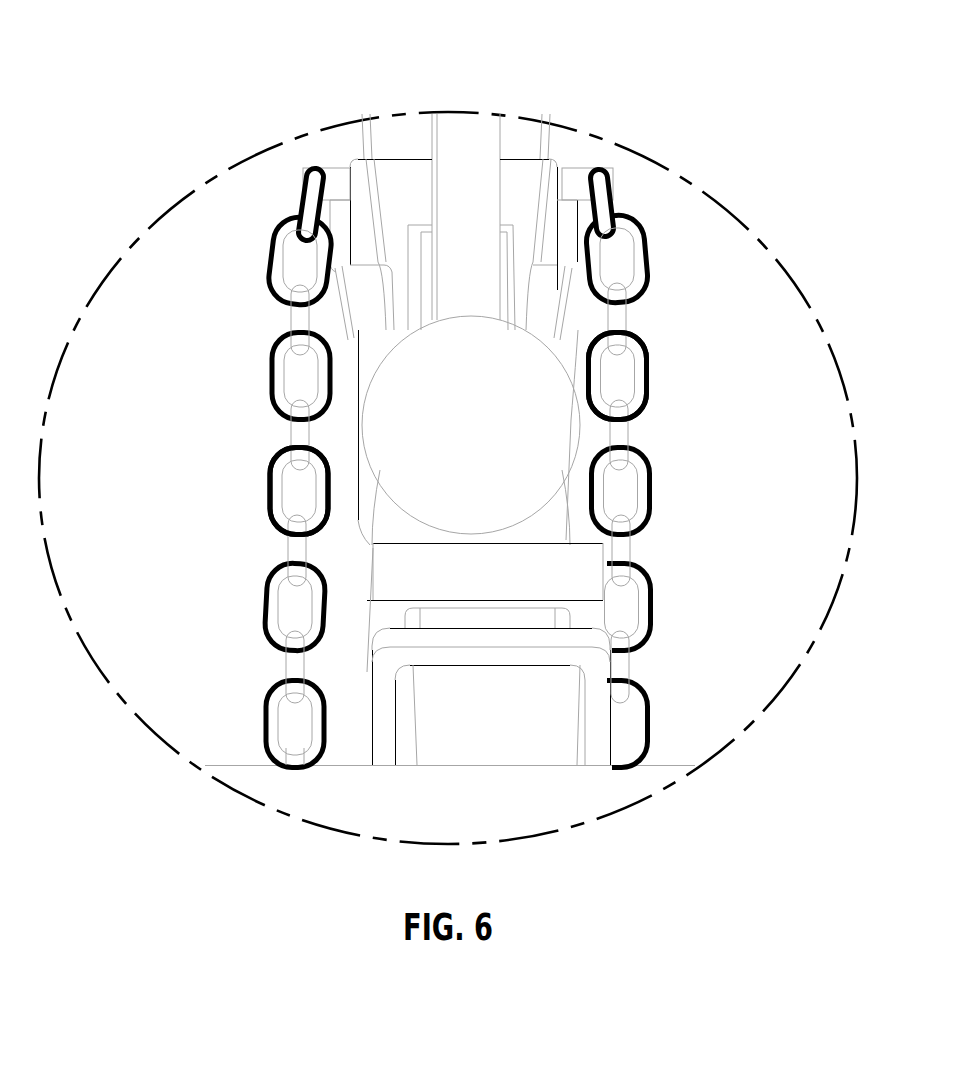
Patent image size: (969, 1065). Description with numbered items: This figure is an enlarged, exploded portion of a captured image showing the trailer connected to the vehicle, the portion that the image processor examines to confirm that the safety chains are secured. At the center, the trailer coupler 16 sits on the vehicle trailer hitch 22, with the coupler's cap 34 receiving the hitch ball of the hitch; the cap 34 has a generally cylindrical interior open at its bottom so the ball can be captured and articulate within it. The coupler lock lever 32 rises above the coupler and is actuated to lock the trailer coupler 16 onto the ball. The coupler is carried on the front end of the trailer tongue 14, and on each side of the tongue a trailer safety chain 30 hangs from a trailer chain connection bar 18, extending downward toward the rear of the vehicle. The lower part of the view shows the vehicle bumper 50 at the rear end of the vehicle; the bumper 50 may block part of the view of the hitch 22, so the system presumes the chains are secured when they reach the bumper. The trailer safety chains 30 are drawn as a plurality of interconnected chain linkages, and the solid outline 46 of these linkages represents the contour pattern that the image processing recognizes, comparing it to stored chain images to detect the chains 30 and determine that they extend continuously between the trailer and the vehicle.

The trailer tongue 14 is at (517, 138).
The trailer coupler 16 is at (402, 175).
The trailer chain connection bar 18 is at (337, 178).
The vehicle trailer hitch 22 is at (532, 690).
The trailer safety chain 30 is at (643, 346).
The coupler lock lever 32 is at (473, 143).
The cap 34 is at (425, 388).
The solid outline 46 is at (650, 384).
The vehicle bumper 50 is at (565, 762).